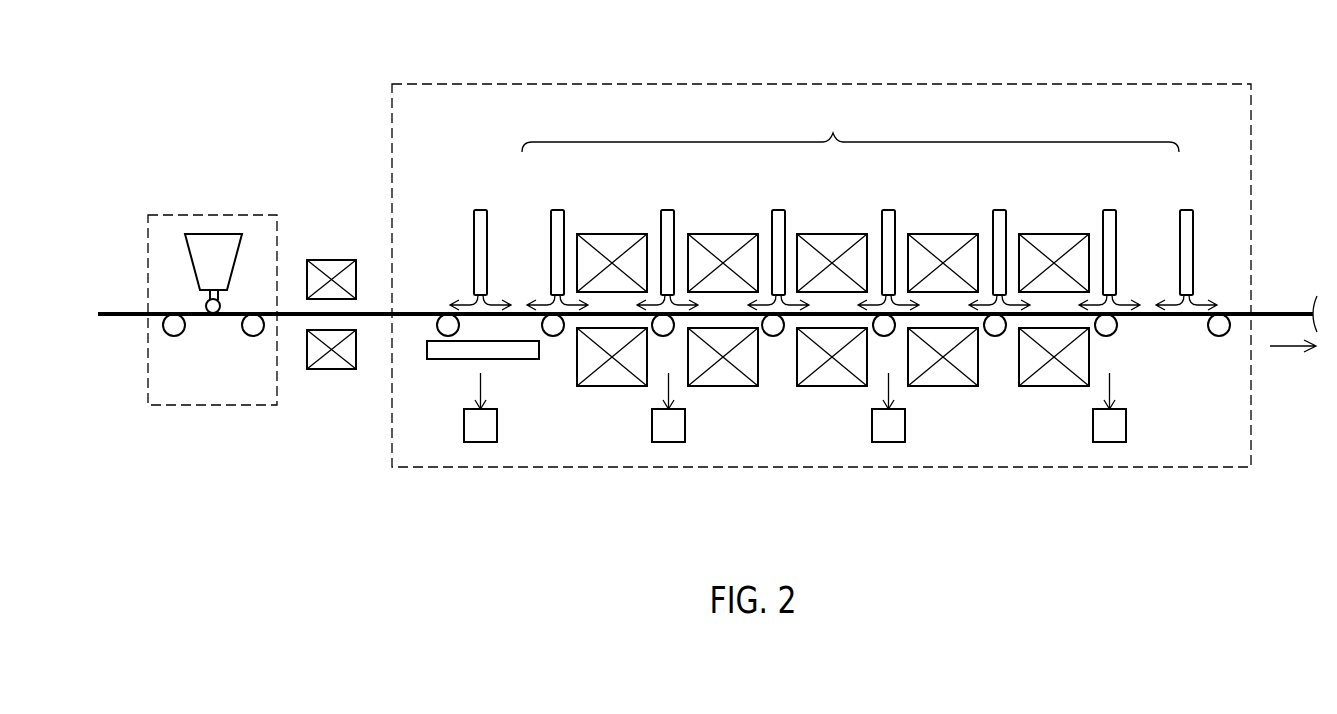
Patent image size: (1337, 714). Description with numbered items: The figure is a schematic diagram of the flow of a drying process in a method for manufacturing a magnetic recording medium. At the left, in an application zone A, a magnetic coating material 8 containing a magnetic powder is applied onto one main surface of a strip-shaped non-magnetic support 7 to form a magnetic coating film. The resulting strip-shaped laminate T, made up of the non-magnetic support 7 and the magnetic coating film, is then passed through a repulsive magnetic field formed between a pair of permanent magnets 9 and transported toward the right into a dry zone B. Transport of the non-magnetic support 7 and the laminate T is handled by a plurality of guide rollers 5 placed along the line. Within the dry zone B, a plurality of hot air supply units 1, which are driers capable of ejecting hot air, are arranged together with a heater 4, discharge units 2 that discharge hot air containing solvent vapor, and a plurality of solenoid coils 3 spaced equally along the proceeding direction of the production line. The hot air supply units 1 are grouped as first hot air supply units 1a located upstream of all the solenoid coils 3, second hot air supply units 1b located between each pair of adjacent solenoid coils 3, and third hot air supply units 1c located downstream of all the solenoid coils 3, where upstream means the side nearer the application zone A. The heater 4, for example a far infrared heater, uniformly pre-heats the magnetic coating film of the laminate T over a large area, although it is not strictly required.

The hot air supply units 1 is at (833, 205).
The first hot air supply units 1a is at (480, 210).
The second hot air supply units 1b is at (667, 210).
The third hot air supply units 1c is at (1109, 210).
The discharge units 2 is at (490, 425).
The solenoid coils 3 is at (612, 386).
The heater 4 is at (518, 354).
The guide rollers 5 is at (773, 336).
The non-magnetic support 7 is at (128, 316).
The magnetic coating material 8 is at (222, 305).
The permanent magnets 9 is at (330, 369).
The application zone A is at (236, 215).
The dry zone B is at (1192, 84).
The laminate T is at (419, 312).